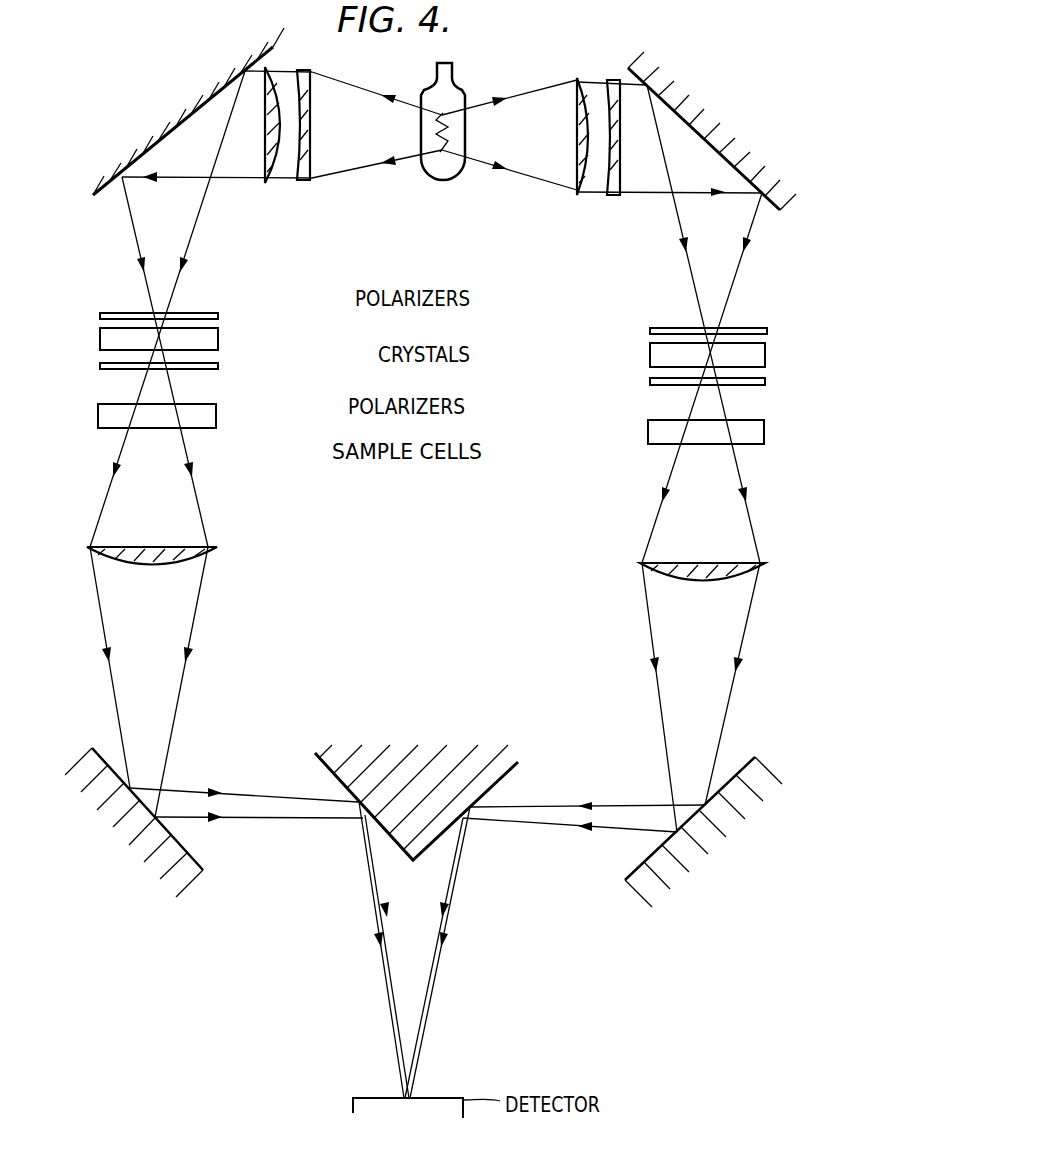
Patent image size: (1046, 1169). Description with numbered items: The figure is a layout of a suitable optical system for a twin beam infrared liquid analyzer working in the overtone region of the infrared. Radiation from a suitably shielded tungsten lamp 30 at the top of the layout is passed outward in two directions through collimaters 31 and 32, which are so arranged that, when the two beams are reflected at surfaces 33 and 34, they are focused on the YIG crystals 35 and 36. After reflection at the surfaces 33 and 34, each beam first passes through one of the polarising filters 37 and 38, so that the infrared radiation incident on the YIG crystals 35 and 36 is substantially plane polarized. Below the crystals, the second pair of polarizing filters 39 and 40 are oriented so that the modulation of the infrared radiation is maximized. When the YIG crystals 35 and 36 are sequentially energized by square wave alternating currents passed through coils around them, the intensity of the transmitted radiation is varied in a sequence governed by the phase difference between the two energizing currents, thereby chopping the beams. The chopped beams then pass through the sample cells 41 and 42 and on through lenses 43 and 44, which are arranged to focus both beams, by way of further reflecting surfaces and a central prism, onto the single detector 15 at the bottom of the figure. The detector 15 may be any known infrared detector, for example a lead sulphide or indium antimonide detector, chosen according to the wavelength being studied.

The detector 15 is at (450, 1097).
The tungsten lamp 30 is at (455, 95).
The collimater 31 is at (272, 183).
The collimater 32 is at (605, 196).
The reflecting surface 33 is at (198, 86).
The reflecting surface 34 is at (712, 128).
The YIG crystal 35 is at (375, 354).
The YIG crystal 36 is at (473, 355).
The polarising filter 37 is at (352, 297).
The polarising filter 38 is at (475, 302).
The polarizing filter 39 is at (346, 406).
The polarizing filter 40 is at (470, 409).
The sample cell 41 is at (330, 452).
The sample cell 42 is at (486, 450).
The lens 43 is at (215, 549).
The lens 44 is at (648, 562).